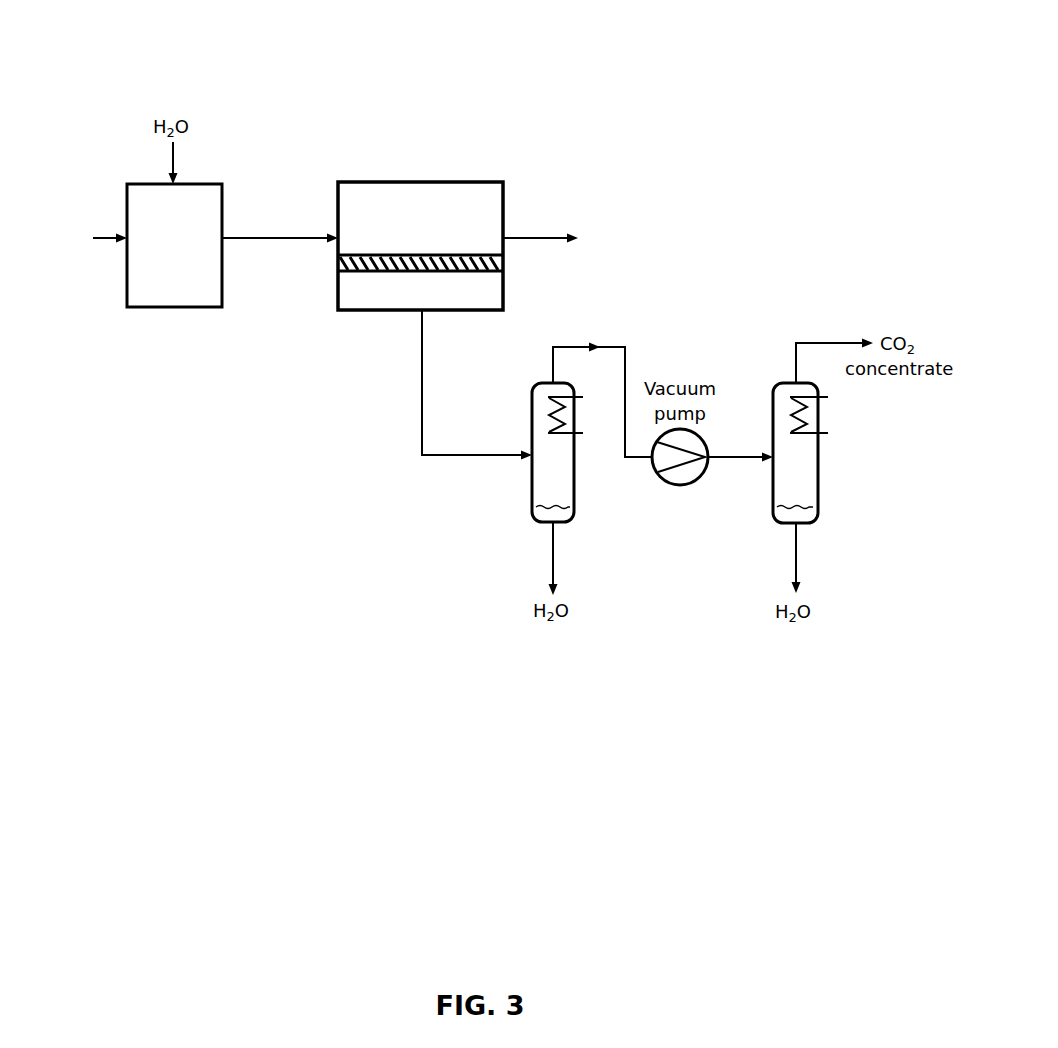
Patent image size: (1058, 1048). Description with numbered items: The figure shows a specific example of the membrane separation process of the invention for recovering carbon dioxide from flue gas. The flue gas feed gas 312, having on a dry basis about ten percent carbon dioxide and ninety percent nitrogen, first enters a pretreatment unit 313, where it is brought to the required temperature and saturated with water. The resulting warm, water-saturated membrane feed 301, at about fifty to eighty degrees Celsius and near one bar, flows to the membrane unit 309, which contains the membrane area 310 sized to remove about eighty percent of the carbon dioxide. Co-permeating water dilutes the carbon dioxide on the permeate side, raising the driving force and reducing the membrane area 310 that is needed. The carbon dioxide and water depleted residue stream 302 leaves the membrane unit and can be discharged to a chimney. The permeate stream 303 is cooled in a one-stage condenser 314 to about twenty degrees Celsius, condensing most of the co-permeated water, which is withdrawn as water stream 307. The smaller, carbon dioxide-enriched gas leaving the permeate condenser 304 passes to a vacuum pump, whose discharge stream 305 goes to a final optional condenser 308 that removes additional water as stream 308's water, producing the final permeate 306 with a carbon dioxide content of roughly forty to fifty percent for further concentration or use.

The membrane feed 301 is at (265, 238).
The residue stream 302 is at (607, 237).
The permeate stream 303 is at (477, 385).
The gas leaving the permeate condenser 304 is at (602, 389).
The vacuum pump discharge stream 305 is at (740, 467).
The final permeate 306 is at (826, 352).
The condensed water stream from first condenser 307 is at (573, 558).
The final optional condenser 308 is at (817, 558).
The membrane unit 309 is at (413, 182).
The membrane area 310 is at (338, 268).
The flue gas feed gas 312 is at (84, 262).
The pretreatment unit 313 is at (168, 307).
The condenser 314 is at (530, 488).